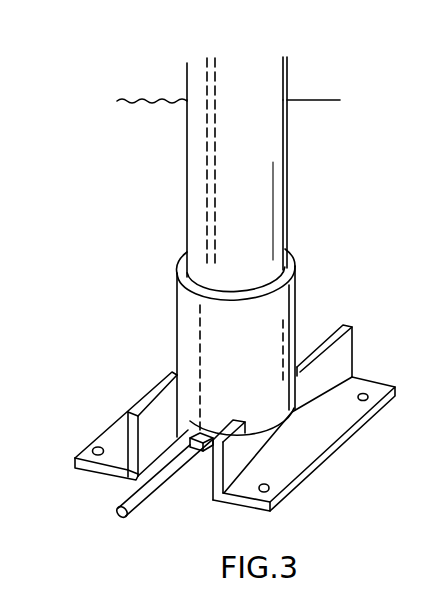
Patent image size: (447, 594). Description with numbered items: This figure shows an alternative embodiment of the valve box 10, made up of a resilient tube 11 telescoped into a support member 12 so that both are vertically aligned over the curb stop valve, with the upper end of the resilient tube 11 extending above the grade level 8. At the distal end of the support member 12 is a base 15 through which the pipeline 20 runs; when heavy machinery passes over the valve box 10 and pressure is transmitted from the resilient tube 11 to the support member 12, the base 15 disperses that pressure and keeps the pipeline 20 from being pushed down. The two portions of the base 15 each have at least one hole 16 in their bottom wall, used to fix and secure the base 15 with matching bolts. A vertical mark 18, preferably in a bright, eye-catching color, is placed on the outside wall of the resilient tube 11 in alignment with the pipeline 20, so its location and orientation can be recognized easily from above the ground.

The grade level 8 is at (310, 100).
The valve box 10 is at (150, 138).
The resilient tube 11 is at (290, 192).
The support member 12 is at (267, 332).
The base 15 is at (303, 452).
The hole 16 is at (364, 391).
The mark 18 is at (208, 197).
The pipeline 20 is at (150, 505).